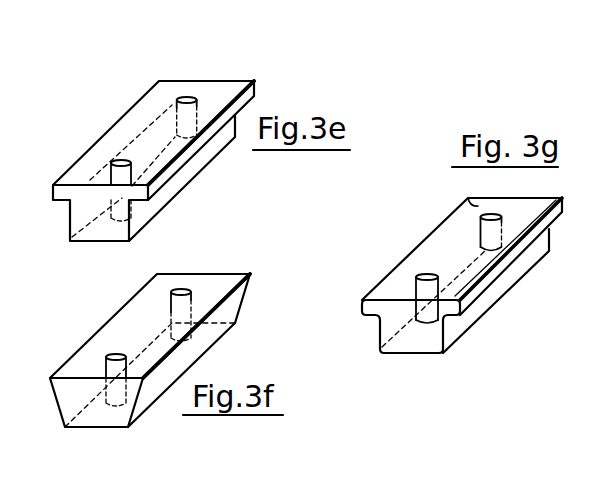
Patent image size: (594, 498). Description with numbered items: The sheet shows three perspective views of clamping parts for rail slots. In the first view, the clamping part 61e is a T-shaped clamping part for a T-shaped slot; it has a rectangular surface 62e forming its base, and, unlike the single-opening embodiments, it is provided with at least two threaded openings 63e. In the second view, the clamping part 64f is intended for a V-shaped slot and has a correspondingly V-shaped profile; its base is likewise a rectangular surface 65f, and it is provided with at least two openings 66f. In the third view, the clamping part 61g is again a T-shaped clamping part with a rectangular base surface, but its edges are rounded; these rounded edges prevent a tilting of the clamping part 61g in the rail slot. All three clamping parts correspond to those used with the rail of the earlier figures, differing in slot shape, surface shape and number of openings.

In FIG. 3e, the clamping part 61e is at (212, 127).
In FIG. 3e, the rectangular surface 62e is at (207, 93).
In FIG. 3e, the threaded openings 63e is at (177, 97).
In FIG. 3f, the clamping part 64f is at (236, 296).
In FIG. 3f, the rectangular surface 65f is at (203, 302).
In FIG. 3f, the openings 66f is at (170, 291).
In FIG. 3g, the clamping part 61g is at (527, 238).